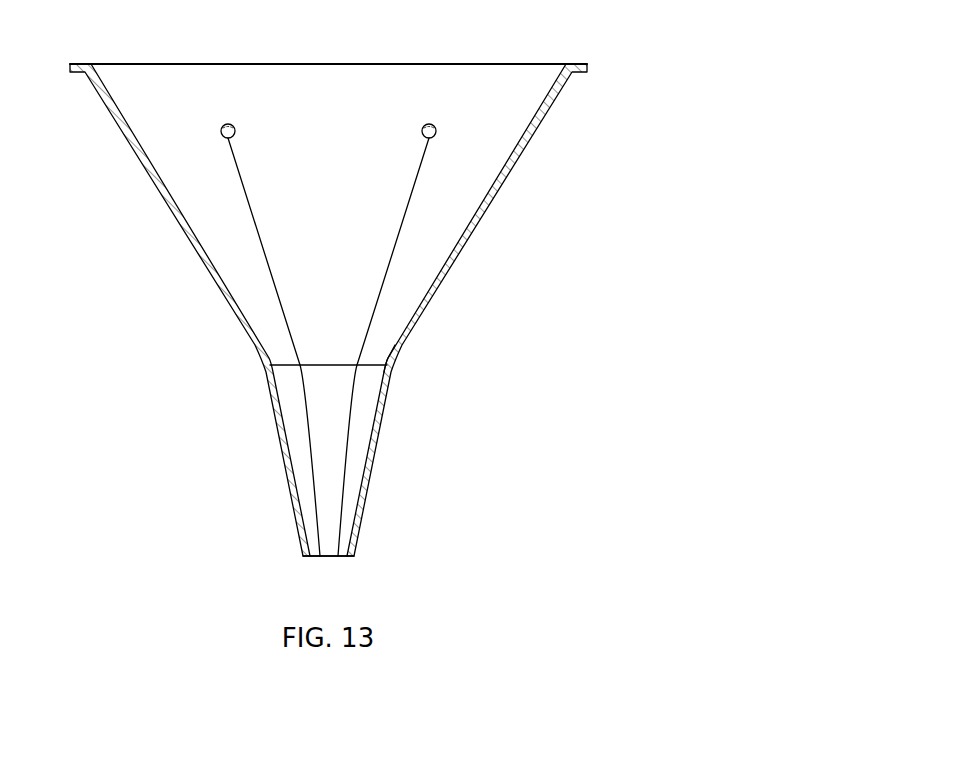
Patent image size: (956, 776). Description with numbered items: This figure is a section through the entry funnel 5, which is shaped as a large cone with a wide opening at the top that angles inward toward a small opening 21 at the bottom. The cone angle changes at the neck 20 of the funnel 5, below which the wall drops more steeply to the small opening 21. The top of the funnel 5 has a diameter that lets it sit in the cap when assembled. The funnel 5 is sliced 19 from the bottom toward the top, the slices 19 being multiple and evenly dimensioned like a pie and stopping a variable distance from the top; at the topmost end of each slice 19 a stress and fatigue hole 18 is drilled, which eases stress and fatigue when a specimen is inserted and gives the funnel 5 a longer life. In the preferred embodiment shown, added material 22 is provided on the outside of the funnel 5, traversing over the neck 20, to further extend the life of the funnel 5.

The funnel 5 is at (496, 92).
The stress and fatigue holes 18 is at (236, 127).
The slices 19 is at (392, 250).
The neck 20 is at (328, 364).
The small opening 21 is at (325, 560).
The added material 22 is at (397, 370).